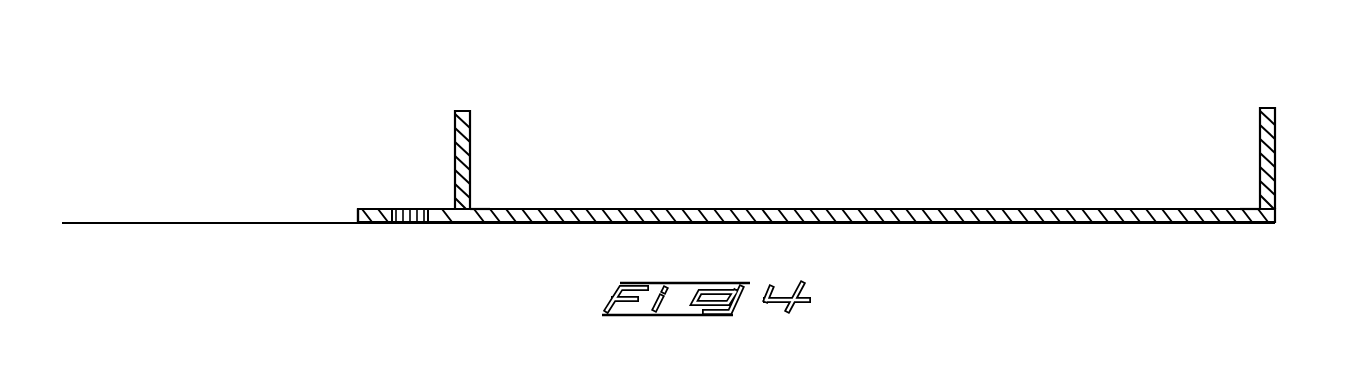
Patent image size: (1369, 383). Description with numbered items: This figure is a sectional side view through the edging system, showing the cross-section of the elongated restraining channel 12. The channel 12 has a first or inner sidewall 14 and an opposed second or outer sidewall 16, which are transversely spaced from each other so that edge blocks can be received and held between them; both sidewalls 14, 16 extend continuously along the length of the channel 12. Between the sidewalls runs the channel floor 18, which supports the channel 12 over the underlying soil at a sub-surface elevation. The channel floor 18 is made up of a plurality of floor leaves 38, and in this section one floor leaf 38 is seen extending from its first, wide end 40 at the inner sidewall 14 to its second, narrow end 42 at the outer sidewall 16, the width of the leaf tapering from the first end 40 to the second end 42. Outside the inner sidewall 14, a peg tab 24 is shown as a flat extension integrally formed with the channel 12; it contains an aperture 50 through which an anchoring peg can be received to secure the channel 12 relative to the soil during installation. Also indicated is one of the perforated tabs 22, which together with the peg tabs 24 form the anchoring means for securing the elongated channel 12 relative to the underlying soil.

The elongated restraining channel 12 is at (1025, 70).
The inner sidewall 14 is at (472, 130).
The outer sidewall 16 is at (1277, 128).
The channel floor 18 is at (862, 176).
The perforated tabs 22 is at (200, 222).
The peg tabs 24 is at (368, 210).
The floor leaf 38 is at (938, 207).
The first, wide end 40 is at (481, 200).
The second, narrow end 42 is at (1240, 203).
The aperture 50 is at (412, 224).